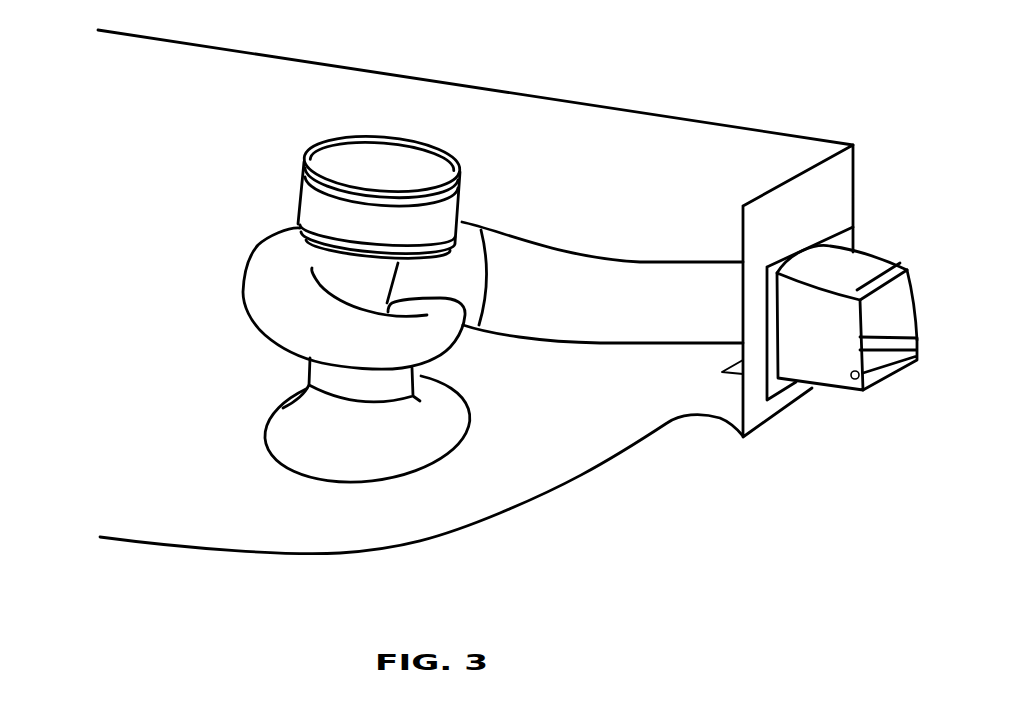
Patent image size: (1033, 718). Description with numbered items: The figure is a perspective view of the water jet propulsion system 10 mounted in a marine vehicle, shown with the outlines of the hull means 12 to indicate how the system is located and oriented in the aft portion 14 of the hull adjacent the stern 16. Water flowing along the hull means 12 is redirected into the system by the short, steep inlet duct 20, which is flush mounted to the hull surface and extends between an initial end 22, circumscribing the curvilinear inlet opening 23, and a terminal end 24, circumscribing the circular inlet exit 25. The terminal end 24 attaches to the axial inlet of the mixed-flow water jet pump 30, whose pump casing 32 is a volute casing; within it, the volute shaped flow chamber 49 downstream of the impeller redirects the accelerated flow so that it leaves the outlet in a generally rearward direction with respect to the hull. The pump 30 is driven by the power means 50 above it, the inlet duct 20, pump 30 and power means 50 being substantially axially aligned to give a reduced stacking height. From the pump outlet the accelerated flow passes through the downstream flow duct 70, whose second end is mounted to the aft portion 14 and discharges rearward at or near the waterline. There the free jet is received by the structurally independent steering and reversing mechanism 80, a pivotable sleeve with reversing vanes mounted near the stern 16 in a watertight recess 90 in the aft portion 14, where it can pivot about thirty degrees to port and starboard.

The water jet propulsion system 10 is at (125, 223).
The hull means 12 is at (848, 119).
The aft portion 14 is at (563, 100).
The stern 16 is at (838, 182).
The inlet duct 20 is at (420, 445).
The initial end 22 is at (257, 452).
The inlet opening 23 is at (350, 500).
The terminal end 24 is at (310, 385).
The inlet exit 25 is at (356, 421).
The water jet pump 30 is at (291, 279).
The pump casing 32 is at (400, 382).
The volute shaped flow chamber 49 is at (257, 253).
The power means 50 is at (442, 213).
The downstream flow duct 70 is at (587, 275).
The steering and reversing mechanism 80 is at (859, 421).
The watertight recess 90 is at (838, 238).